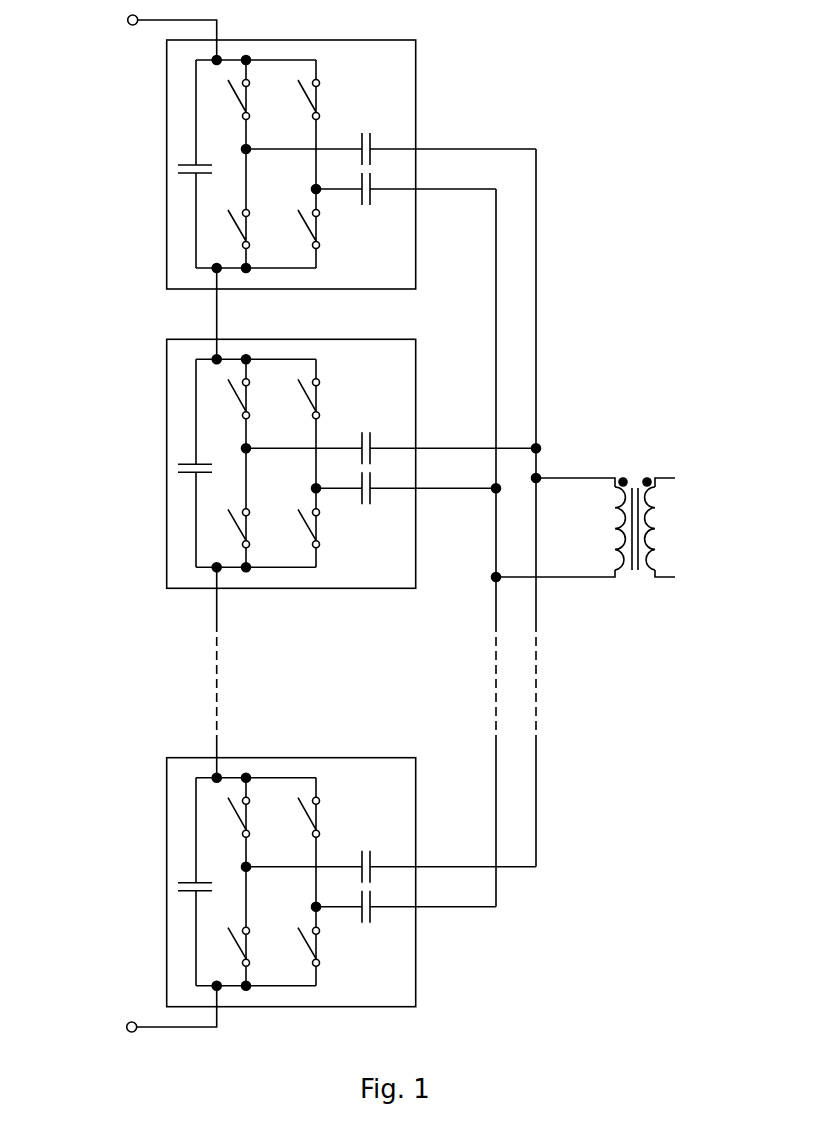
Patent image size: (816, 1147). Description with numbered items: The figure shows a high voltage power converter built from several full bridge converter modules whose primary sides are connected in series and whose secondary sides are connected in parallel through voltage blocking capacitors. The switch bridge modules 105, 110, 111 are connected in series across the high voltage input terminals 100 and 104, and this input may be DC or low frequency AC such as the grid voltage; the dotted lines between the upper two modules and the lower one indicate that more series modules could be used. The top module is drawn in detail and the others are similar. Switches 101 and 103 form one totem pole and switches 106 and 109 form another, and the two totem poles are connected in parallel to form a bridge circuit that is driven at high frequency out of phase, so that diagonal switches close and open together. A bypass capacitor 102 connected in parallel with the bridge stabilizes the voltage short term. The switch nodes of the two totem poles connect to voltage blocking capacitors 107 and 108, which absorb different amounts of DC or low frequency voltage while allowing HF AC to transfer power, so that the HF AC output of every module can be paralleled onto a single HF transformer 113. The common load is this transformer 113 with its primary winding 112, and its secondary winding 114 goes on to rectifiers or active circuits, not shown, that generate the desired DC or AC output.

The high voltage input terminal 100 is at (150, 28).
The switch 101 is at (227, 55).
The bypass capacitor 102 is at (186, 138).
The switch 103 is at (227, 188).
The high voltage input terminal 104 is at (152, 1018).
The switch bridge module 105 is at (301, 154).
The switch 106 is at (325, 60).
The voltage blocking capacitor 107 is at (375, 90).
The voltage blocking capacitor 108 is at (375, 160).
The switch 109 is at (325, 203).
The switch bridge module 110 is at (370, 597).
The switch bridge module 111 is at (380, 749).
The primary winding 112 is at (615, 520).
The HF transformer 113 is at (634, 472).
The secondary winding 114 is at (665, 518).